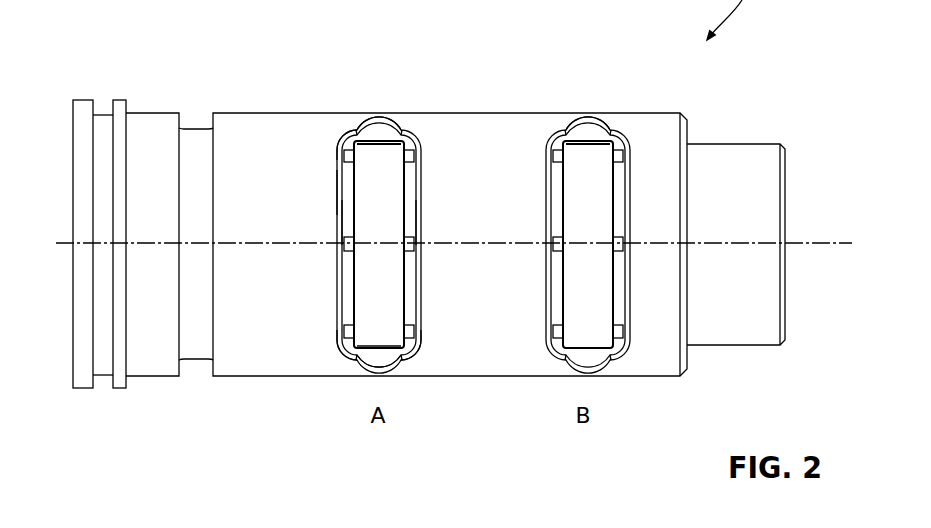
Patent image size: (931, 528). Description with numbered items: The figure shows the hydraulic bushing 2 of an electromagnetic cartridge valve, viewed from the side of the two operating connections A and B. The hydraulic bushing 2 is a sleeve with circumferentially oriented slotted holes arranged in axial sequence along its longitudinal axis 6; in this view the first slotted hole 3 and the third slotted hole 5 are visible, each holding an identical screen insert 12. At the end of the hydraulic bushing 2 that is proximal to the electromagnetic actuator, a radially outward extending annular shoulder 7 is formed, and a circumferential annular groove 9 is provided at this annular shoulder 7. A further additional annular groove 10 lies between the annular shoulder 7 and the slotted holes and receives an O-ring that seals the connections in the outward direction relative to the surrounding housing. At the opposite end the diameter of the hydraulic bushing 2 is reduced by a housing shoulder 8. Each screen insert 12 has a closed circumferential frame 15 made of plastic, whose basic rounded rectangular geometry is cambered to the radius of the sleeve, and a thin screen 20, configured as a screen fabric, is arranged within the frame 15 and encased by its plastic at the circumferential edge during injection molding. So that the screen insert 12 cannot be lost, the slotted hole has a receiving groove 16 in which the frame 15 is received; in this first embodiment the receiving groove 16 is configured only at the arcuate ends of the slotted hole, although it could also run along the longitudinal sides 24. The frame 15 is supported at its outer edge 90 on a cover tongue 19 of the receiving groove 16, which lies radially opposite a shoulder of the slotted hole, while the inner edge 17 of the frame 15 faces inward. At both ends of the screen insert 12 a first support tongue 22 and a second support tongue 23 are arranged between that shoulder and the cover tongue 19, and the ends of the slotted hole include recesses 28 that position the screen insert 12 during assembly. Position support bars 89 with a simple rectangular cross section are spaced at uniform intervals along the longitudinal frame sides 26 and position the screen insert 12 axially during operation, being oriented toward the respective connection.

The hydraulic bushing 2 is at (262, 106).
The first slotted hole 3 is at (416, 120).
The third slotted hole 5 is at (626, 120).
The longitudinal axis 6 is at (816, 240).
The annular shoulder 7 is at (84, 108).
The housing shoulder 8 is at (694, 128).
The annular groove 9 is at (102, 110).
The additional annular groove 10 is at (193, 127).
The screen insert 12 is at (380, 112).
The frame 15 is at (414, 190).
The receiving groove 16 is at (340, 130).
The inner edge 17 is at (411, 279).
The cover tongue 19 is at (400, 366).
The thin screen 20 is at (390, 228).
The first support tongue 22 is at (392, 126).
The second support tongue 23 is at (364, 362).
The longitudinal side 24 is at (341, 223).
The longitudinal frame side 26 is at (344, 192).
The recess 28 is at (370, 370).
The position support bar 89 is at (343, 330).
The outer edge 90 is at (421, 225).